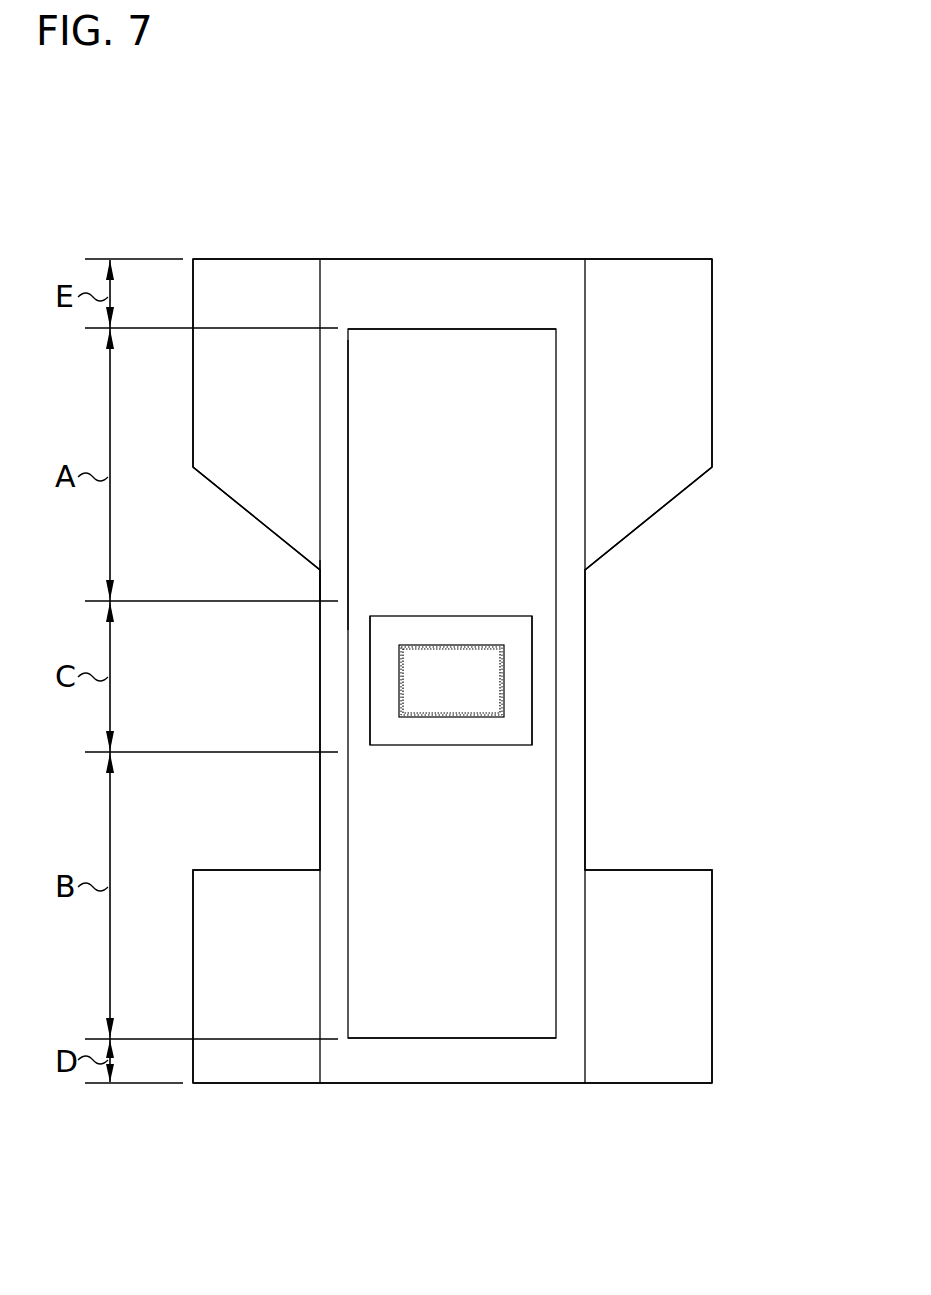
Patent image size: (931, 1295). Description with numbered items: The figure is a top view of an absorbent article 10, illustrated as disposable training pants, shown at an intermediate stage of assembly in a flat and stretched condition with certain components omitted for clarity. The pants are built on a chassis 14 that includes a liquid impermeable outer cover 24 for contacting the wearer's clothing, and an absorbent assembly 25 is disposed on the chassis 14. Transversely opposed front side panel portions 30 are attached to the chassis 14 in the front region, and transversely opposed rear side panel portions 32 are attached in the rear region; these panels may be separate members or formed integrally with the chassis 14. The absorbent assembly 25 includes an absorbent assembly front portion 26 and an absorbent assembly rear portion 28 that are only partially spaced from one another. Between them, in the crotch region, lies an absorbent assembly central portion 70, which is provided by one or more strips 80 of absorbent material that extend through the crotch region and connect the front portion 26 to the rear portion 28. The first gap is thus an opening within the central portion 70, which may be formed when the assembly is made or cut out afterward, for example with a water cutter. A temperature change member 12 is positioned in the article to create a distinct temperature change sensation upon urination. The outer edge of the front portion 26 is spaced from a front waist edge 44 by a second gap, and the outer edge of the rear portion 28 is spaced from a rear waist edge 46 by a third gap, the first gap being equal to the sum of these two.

The absorbent article 10 is at (720, 616).
The temperature change member 12 is at (480, 667).
The chassis 14 is at (312, 578).
The outer cover 24 is at (572, 810).
The absorbent assembly 25 is at (540, 366).
The absorbent assembly front portion 26 is at (412, 1026).
The absorbent assembly rear portion 28 is at (430, 352).
The front side panel portions 30 is at (216, 966).
The rear side panel portions 32 is at (218, 374).
The front waist edge 44 is at (543, 1084).
The rear waist edge 46 is at (533, 258).
The absorbent assembly central portion 70 is at (543, 735).
The strips 80 is at (358, 718).